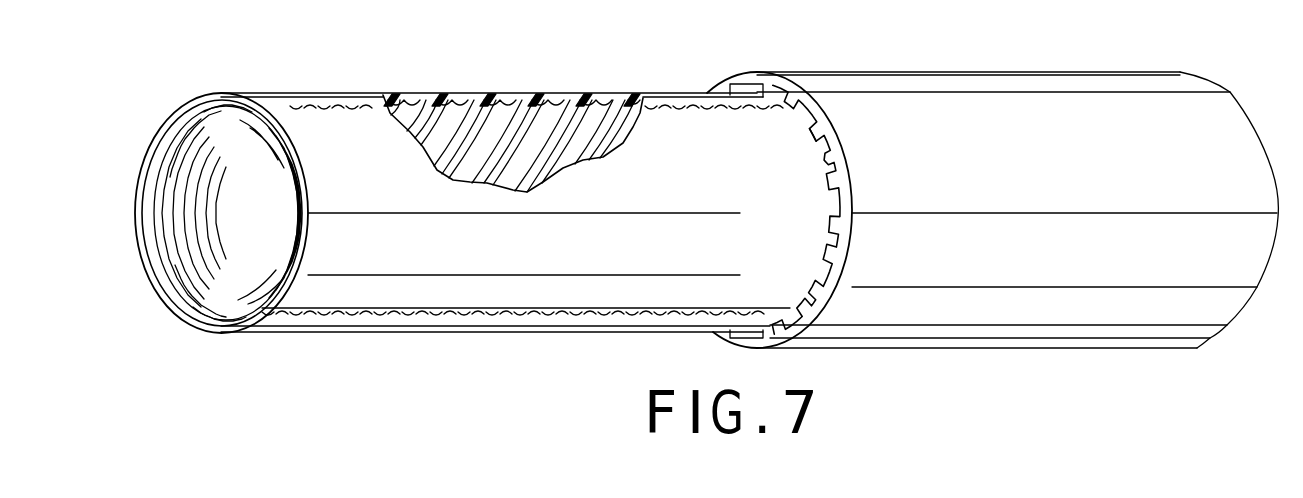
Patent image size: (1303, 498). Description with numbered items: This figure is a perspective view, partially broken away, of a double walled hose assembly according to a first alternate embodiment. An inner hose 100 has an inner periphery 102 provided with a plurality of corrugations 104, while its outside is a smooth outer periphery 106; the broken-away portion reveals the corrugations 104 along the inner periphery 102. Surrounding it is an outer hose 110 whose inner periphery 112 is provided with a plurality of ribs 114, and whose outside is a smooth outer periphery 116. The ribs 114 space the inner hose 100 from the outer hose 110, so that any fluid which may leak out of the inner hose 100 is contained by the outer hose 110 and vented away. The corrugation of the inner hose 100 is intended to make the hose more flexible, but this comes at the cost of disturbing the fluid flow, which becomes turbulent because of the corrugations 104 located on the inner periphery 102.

The inner hose 100 is at (432, 92).
The inner periphery 102 is at (218, 256).
The corrugations 104 is at (175, 177).
The smooth outer periphery 106 is at (279, 92).
The outer hose 110 is at (880, 72).
The inner periphery 112 is at (826, 158).
The ribs 114 is at (808, 132).
The smooth outer periphery 116 is at (1048, 90).